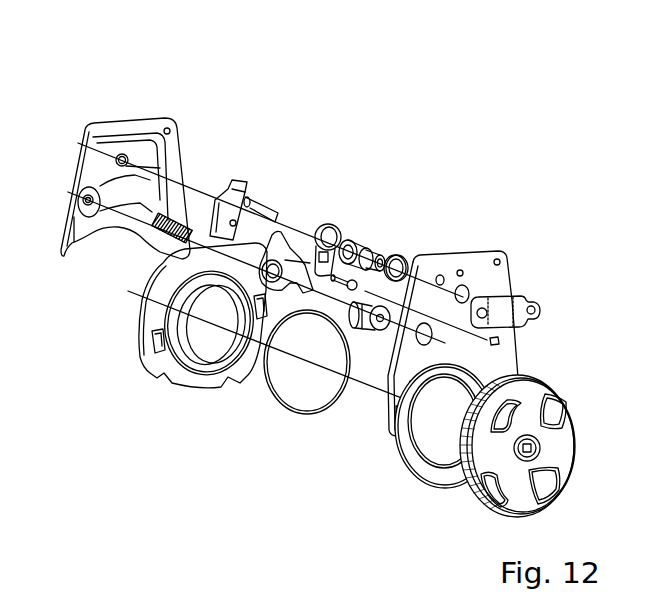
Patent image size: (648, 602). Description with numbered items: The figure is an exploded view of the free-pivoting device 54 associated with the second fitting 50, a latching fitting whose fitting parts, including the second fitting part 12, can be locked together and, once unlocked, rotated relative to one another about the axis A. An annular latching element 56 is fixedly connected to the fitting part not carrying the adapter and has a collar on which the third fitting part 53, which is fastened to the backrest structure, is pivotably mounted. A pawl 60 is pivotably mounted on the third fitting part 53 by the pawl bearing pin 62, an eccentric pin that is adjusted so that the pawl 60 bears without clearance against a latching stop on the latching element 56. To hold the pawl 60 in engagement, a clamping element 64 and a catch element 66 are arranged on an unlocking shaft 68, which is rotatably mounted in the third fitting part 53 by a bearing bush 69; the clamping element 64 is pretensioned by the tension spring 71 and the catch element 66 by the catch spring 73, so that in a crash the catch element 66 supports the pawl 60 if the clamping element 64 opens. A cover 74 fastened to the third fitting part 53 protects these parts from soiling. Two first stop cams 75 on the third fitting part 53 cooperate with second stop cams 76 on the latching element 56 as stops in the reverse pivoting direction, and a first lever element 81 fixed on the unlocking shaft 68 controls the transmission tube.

The second fitting part 12 is at (487, 455).
The second fitting 50 is at (558, 392).
The third fitting part 53 is at (477, 263).
The free-pivoting device 54 is at (382, 173).
The annular latching element 56 is at (165, 293).
The pawl 60 is at (288, 267).
The pawl bearing pin 62 is at (367, 323).
The clamping element 64 is at (323, 228).
The catch element 66 is at (219, 205).
The unlocking shaft 68 is at (250, 203).
The bearing bush 69 is at (363, 257).
The tension spring 71 is at (392, 268).
The catch spring 73 is at (155, 233).
The cover 74 is at (155, 158).
The first stop cam 75 is at (393, 443).
The second stop cam 76 is at (160, 340).
The first lever element 81 is at (517, 303).
The axis A is at (385, 395).